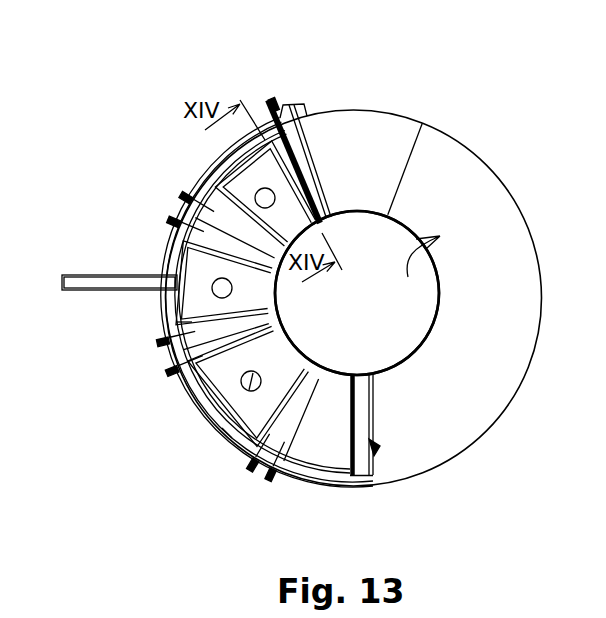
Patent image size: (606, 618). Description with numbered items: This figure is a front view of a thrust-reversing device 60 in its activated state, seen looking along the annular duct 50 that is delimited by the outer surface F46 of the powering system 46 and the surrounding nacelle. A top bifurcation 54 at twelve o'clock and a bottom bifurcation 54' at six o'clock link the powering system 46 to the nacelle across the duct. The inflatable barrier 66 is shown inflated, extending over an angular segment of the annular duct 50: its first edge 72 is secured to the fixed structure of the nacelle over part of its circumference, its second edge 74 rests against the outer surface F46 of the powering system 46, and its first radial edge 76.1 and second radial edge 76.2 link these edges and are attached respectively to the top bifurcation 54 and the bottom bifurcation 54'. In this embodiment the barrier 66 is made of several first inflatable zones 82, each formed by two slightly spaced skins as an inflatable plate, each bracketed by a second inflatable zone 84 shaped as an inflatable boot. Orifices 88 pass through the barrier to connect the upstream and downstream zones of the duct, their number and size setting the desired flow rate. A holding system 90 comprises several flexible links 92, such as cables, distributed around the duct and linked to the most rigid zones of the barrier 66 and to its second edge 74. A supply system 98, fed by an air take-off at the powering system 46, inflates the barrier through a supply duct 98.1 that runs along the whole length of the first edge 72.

The annular duct 50 is at (354, 298).
The powering system 46 is at (357, 293).
The second edge 74 is at (298, 345).
The outer surface F46 is at (412, 270).
The top bifurcation 54 is at (400, 134).
The bottom bifurcation 54' is at (387, 485).
The thrust-reversing device 60 is at (170, 193).
The first edge 72 is at (182, 258).
The first radial edge 76.1 is at (306, 104).
The holding system 90 is at (316, 162).
The second radial edge 76.2 is at (350, 435).
The first inflatable zone 82 is at (230, 176).
The orifice 88 is at (275, 203).
The flexible link 92 is at (168, 217).
The second inflatable zone 84 is at (193, 343).
The inflatable barrier 66 is at (192, 320).
The supply system 98 is at (107, 291).
The supply duct 98.1 is at (222, 428).